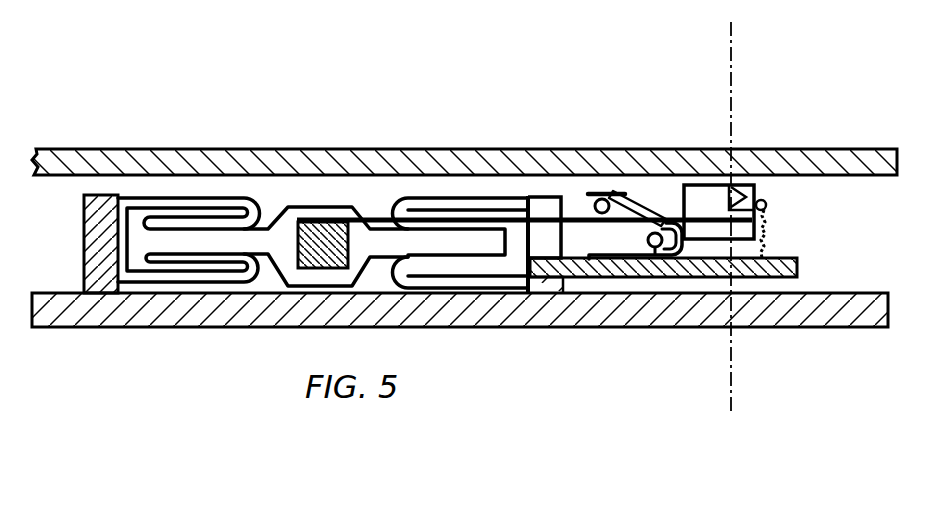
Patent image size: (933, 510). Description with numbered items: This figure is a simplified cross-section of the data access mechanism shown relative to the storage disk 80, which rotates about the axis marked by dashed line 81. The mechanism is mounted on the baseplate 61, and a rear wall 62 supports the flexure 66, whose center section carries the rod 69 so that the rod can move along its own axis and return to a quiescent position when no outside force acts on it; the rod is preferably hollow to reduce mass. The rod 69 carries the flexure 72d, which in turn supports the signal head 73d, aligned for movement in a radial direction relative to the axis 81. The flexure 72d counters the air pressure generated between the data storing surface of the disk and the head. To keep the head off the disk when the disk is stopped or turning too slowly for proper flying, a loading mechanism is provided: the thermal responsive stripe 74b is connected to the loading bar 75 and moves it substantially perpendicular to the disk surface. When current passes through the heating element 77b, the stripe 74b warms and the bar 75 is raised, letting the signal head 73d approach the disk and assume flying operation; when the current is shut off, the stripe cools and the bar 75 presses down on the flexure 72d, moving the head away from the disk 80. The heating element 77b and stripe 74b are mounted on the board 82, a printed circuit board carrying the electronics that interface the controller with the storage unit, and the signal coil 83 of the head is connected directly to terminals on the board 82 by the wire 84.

The baseplate 61 is at (254, 312).
The rear wall 62 is at (90, 257).
The flexure 66 is at (169, 201).
The rod 69 is at (327, 250).
The flexure 72d is at (381, 216).
The signal head 73d is at (756, 190).
The thermal responsive stripe 74b is at (639, 204).
The loading bar 75 is at (587, 195).
The heating element 77b is at (647, 238).
The storage disk 80 is at (830, 160).
The axis 81 is at (732, 78).
The board 82 is at (797, 267).
The signal coil 83 is at (767, 207).
The wire 84 is at (766, 236).